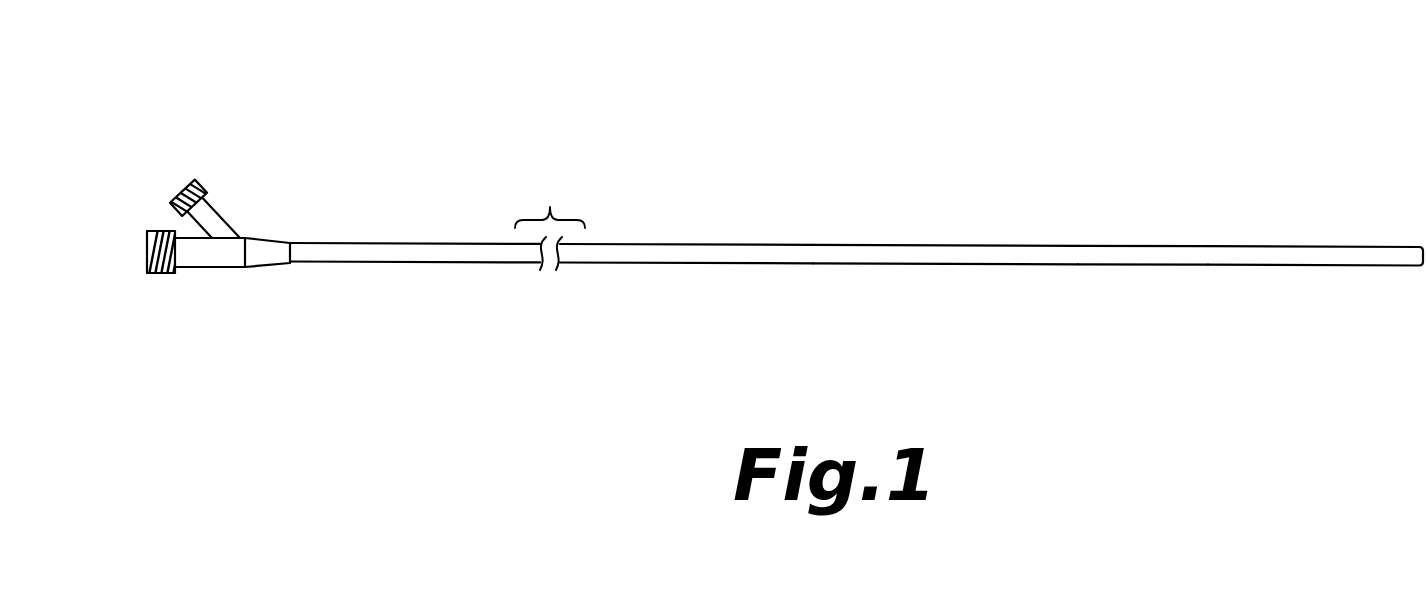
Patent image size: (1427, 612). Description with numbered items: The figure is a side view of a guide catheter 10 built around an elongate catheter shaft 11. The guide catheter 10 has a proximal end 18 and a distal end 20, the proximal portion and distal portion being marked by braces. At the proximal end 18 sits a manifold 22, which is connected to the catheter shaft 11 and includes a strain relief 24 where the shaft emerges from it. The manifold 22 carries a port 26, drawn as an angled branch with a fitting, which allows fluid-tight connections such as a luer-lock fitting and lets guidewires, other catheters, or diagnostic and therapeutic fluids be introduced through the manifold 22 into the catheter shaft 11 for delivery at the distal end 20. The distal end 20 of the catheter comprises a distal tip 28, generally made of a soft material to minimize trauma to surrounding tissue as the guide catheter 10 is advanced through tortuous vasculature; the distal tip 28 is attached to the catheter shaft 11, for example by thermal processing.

The guide catheter 10 is at (869, 150).
The catheter shaft 11 is at (893, 290).
The proximal end 18 is at (285, 137).
The distal end 20 is at (1423, 138).
The manifold 22 is at (213, 312).
The strain relief 24 is at (292, 285).
The port 26 is at (185, 146).
The distal tip 28 is at (1208, 371).